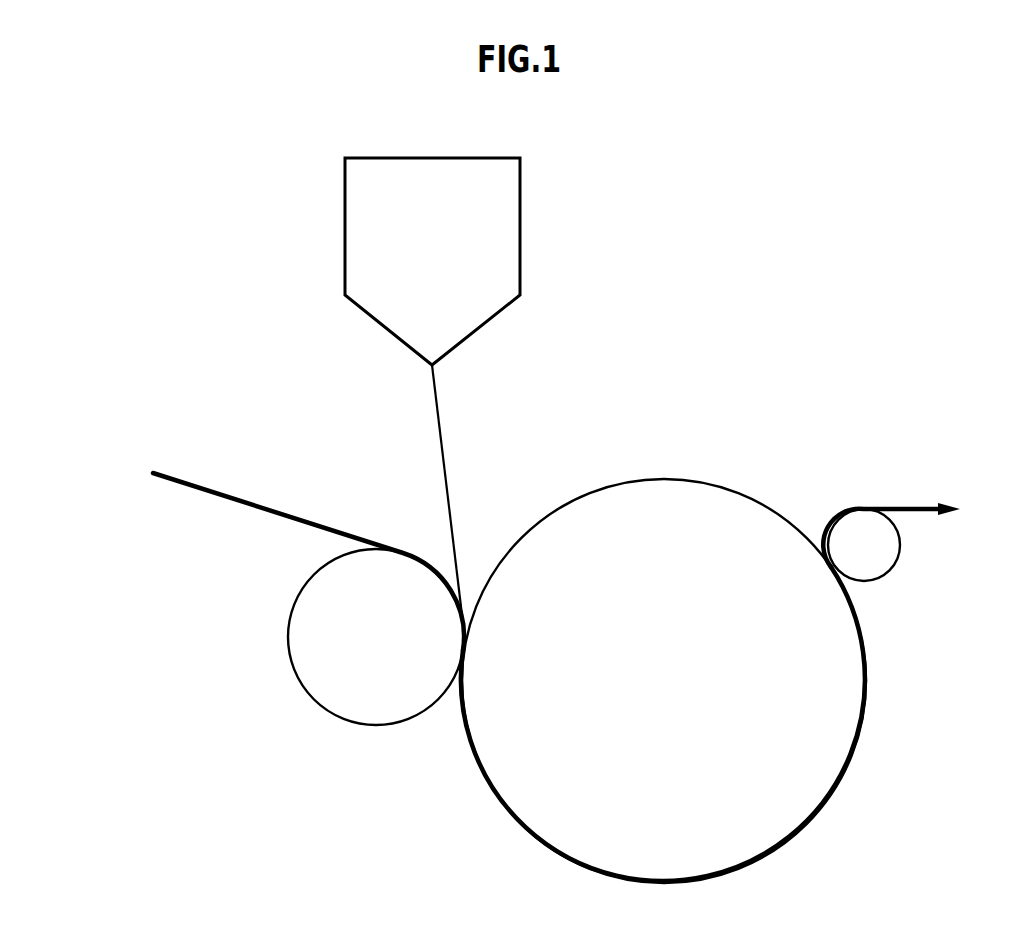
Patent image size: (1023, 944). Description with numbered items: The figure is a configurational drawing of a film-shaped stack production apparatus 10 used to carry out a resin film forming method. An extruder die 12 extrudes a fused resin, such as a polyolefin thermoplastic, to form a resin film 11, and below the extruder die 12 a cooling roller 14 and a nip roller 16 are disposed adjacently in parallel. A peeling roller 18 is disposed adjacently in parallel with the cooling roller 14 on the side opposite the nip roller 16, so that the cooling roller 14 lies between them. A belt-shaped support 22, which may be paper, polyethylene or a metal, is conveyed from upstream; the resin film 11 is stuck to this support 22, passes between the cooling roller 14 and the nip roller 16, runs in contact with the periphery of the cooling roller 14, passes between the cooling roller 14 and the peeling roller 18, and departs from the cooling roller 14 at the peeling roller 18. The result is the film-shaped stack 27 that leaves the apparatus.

The film-shaped stack production apparatus 10 is at (738, 284).
The resin film 11 is at (450, 483).
The extruder die 12 is at (520, 258).
The cooling roller 14 is at (740, 518).
The nip roller 16 is at (402, 698).
The peeling roller 18 is at (872, 552).
The belt-shaped support 22 is at (215, 490).
The film-shaped stack 27 is at (904, 503).